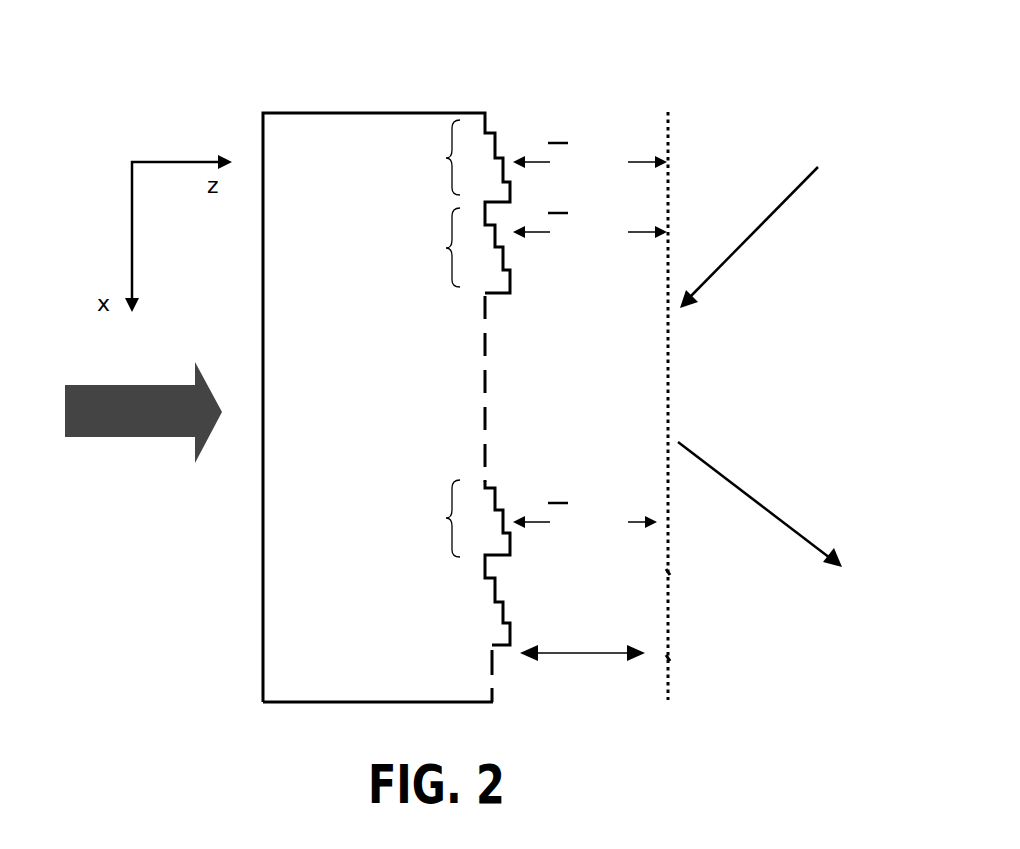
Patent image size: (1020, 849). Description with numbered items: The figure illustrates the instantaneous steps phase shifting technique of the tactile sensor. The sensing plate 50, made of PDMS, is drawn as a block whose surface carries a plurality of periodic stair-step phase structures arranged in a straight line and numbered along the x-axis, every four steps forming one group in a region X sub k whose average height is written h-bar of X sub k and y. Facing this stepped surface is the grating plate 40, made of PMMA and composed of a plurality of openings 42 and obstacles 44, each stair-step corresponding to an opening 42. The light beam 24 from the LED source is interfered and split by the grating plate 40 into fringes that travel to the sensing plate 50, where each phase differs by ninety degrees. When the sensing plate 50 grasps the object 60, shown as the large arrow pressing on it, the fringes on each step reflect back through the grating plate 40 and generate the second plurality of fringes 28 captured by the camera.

The sensing plate 50 is at (325, 112).
The grating plate 40 is at (670, 128).
The light beam 24 is at (755, 230).
The second plurality of fringes 28 is at (758, 497).
The openings 42 is at (668, 572).
The obstacles 44 is at (668, 658).
The object 60 is at (127, 442).